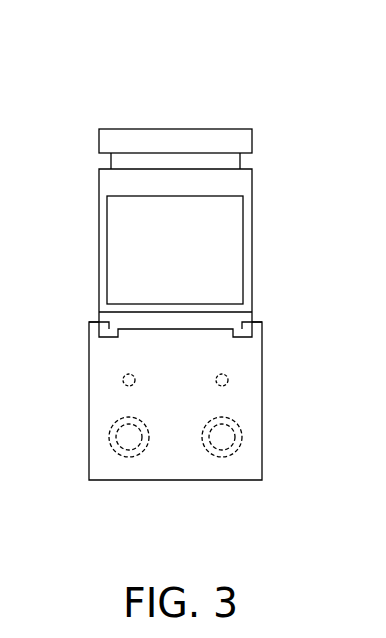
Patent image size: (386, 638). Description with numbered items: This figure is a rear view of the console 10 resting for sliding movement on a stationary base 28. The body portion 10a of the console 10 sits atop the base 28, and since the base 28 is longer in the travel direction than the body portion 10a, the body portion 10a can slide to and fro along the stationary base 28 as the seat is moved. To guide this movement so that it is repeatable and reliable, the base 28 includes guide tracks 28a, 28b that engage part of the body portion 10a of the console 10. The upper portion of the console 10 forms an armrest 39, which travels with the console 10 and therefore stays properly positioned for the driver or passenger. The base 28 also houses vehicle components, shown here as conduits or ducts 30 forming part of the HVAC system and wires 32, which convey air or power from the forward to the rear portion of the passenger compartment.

The console 10 is at (151, 82).
The body portion 10a is at (252, 232).
The armrest 39 is at (234, 139).
The stationary base 28 is at (262, 405).
The guide track 28a is at (92, 322).
The guide track 28b is at (260, 322).
The wires 32 is at (122, 381).
The conduits or ducts 30 is at (208, 450).